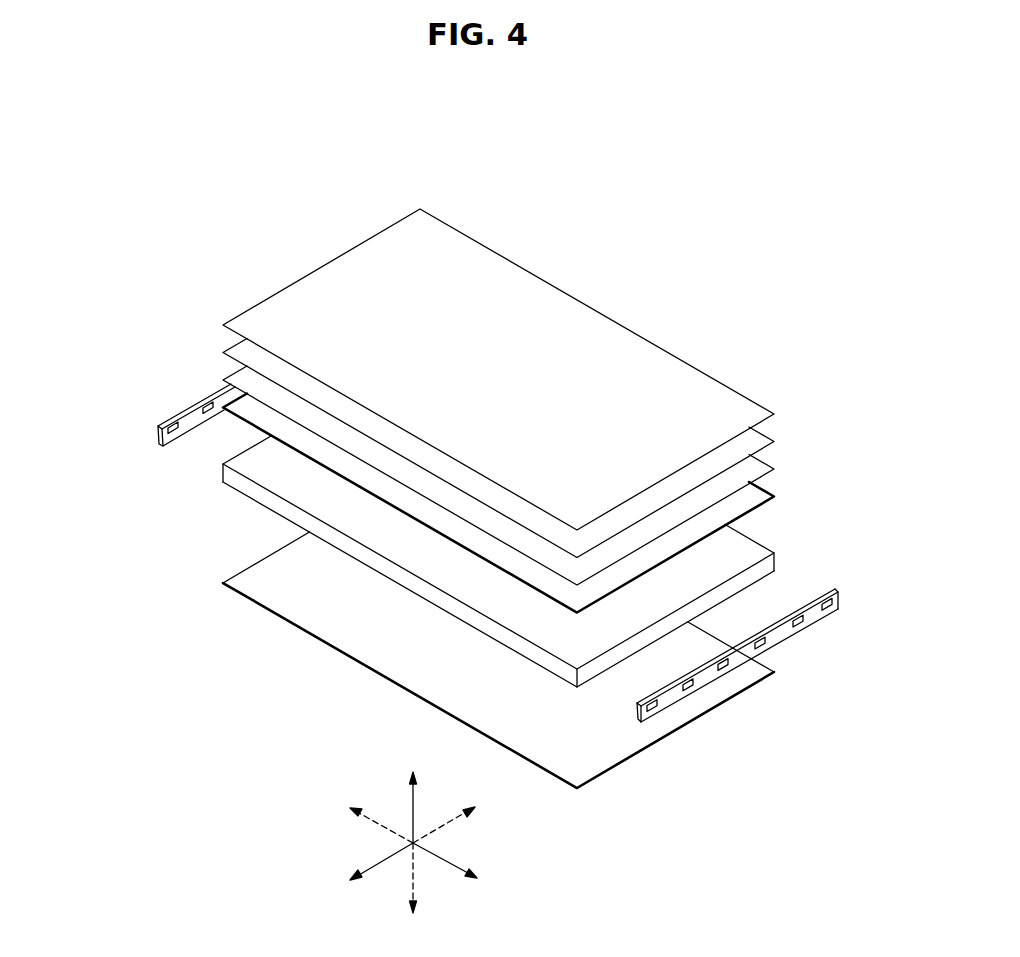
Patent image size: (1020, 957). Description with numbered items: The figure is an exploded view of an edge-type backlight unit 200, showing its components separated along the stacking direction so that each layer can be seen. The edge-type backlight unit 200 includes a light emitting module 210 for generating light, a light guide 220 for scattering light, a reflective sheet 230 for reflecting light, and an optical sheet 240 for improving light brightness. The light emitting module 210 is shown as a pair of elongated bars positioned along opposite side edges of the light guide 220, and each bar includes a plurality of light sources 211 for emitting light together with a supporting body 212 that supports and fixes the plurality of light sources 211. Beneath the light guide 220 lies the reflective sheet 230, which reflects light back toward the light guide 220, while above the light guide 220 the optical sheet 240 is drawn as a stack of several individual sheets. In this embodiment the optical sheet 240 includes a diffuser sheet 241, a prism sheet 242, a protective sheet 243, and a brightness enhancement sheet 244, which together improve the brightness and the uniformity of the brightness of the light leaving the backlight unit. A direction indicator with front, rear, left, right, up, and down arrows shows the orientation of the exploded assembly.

The edge-type backlight unit 200 is at (567, 146).
The light emitting module 210 is at (445, 569).
The light sources 211 is at (170, 419).
The supporting body 212 is at (160, 436).
The light guide 220 is at (252, 482).
The reflective sheet 230 is at (234, 577).
The optical sheet 240 is at (569, 411).
The diffuser sheet 241 is at (535, 503).
The prism sheet 242 is at (762, 469).
The protective sheet 243 is at (762, 442).
The brightness enhancement sheet 244 is at (762, 414).